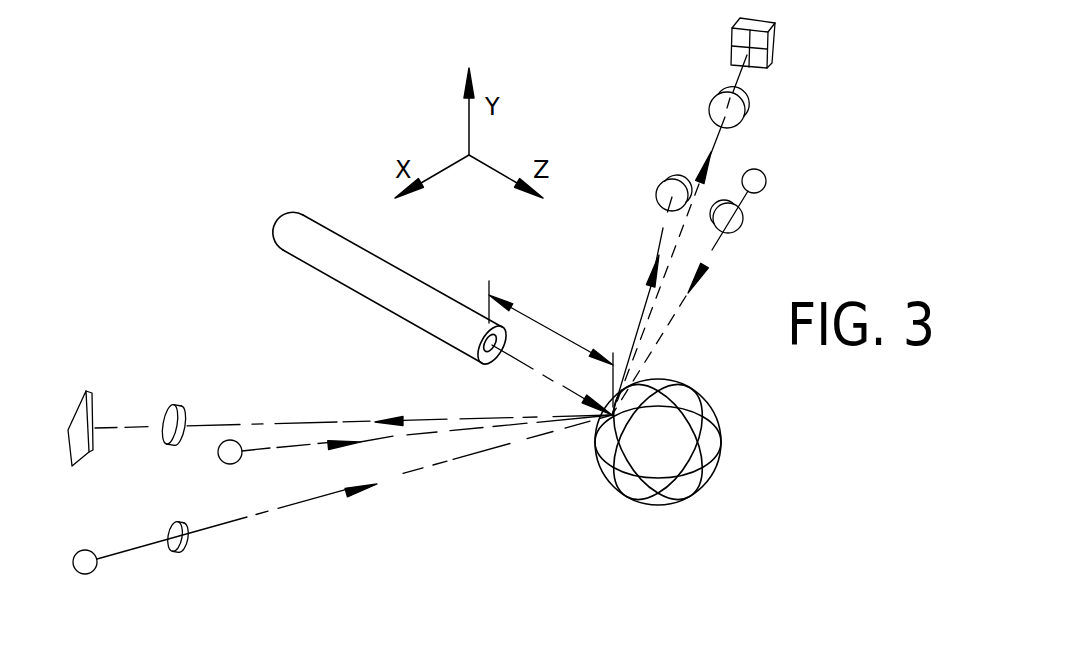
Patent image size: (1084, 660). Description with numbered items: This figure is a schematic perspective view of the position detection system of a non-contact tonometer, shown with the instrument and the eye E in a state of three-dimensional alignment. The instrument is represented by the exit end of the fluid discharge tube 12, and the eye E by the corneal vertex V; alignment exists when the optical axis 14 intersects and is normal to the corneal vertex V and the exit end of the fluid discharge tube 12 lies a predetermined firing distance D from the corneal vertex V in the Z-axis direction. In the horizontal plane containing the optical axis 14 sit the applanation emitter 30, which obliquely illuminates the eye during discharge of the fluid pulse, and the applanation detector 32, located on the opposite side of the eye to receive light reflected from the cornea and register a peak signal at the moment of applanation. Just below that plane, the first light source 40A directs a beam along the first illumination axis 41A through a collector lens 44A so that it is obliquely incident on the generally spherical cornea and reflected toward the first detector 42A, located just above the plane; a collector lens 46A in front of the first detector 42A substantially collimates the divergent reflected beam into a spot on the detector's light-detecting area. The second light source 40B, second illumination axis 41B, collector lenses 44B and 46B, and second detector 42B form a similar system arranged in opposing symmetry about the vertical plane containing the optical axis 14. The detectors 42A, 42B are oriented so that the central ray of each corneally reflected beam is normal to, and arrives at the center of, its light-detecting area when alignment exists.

The fluid discharge tube 12 is at (312, 267).
The optical axis 14 is at (513, 363).
The applanation emitter 30 is at (226, 464).
The applanation detector 32 is at (663, 200).
The first light source 40A is at (762, 177).
The second light source 40B is at (90, 575).
The first illumination axis 41A is at (670, 319).
The second illumination axis 41B is at (293, 506).
The first detector 42A is at (95, 401).
The second detector 42B is at (732, 30).
The collector lens 44A is at (745, 216).
The collector lens 44B is at (190, 551).
The collector lens 46A is at (183, 414).
The collector lens 46B is at (708, 105).
The firing distance D is at (551, 323).
The eye E is at (713, 411).
The corneal vertex V is at (563, 383).